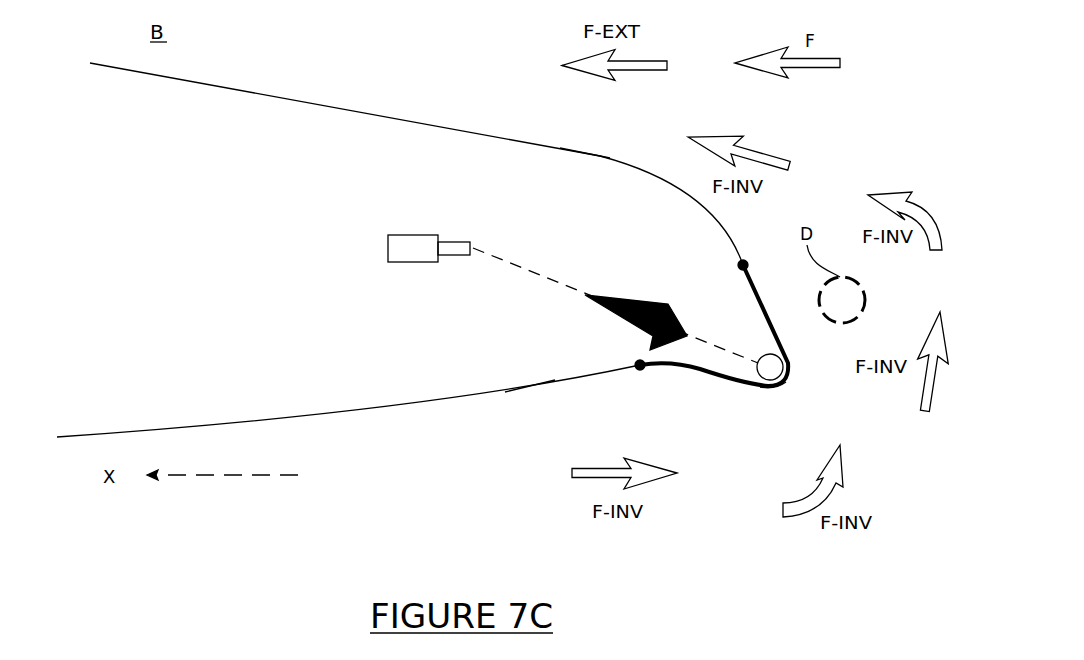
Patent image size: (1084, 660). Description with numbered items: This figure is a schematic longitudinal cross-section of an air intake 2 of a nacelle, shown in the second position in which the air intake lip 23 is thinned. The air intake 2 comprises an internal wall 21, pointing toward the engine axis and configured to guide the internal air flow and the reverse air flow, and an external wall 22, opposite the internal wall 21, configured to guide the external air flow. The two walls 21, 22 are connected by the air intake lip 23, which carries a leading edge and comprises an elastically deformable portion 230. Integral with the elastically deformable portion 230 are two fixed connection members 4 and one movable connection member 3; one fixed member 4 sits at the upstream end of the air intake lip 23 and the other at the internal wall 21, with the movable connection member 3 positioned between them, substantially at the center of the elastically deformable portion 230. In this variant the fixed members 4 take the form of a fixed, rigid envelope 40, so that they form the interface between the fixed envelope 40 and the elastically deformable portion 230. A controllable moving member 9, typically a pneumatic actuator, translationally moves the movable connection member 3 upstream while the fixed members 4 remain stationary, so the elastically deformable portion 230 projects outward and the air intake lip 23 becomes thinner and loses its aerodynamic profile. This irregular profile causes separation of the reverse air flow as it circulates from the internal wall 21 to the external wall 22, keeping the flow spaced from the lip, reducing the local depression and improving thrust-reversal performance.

The air intake 2 is at (421, 110).
The external wall 22 is at (462, 125).
The internal wall 21 is at (442, 402).
The fixed envelope 40 is at (585, 153).
The controllable moving member 9 is at (412, 262).
The elastically deformable portion 230 is at (740, 380).
The fixed connection member 4 is at (747, 263).
The movable connection member 3 is at (790, 378).
The air intake lip 23 is at (765, 402).